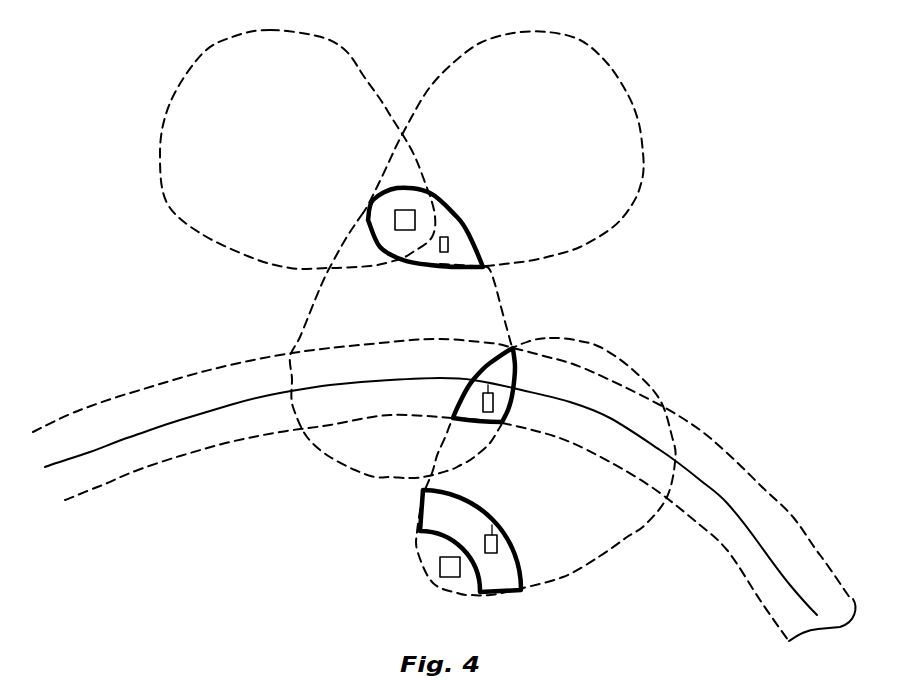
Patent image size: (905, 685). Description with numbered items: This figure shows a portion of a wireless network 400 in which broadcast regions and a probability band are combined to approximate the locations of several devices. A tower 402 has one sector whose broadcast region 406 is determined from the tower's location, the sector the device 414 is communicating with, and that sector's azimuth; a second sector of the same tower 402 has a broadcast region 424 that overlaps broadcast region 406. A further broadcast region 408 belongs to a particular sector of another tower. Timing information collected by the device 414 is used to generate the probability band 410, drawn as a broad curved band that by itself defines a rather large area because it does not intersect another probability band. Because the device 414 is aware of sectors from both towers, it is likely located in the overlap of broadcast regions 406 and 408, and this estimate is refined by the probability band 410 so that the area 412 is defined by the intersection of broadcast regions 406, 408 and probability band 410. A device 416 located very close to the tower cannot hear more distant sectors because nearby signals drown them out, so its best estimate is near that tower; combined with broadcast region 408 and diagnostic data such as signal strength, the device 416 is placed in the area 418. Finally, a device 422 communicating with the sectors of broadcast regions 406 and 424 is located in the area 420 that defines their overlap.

The network 400 is at (560, 292).
The tower 402 is at (407, 210).
The broadcast region 406 is at (500, 300).
The broadcast region 408 is at (563, 577).
The probability band 410 is at (823, 627).
The area 412 is at (515, 368).
The device 414 is at (483, 403).
The device 416 is at (497, 543).
The area 418 is at (480, 500).
The area 420 is at (473, 238).
The device 422 is at (443, 252).
The broadcast region 424 is at (632, 102).